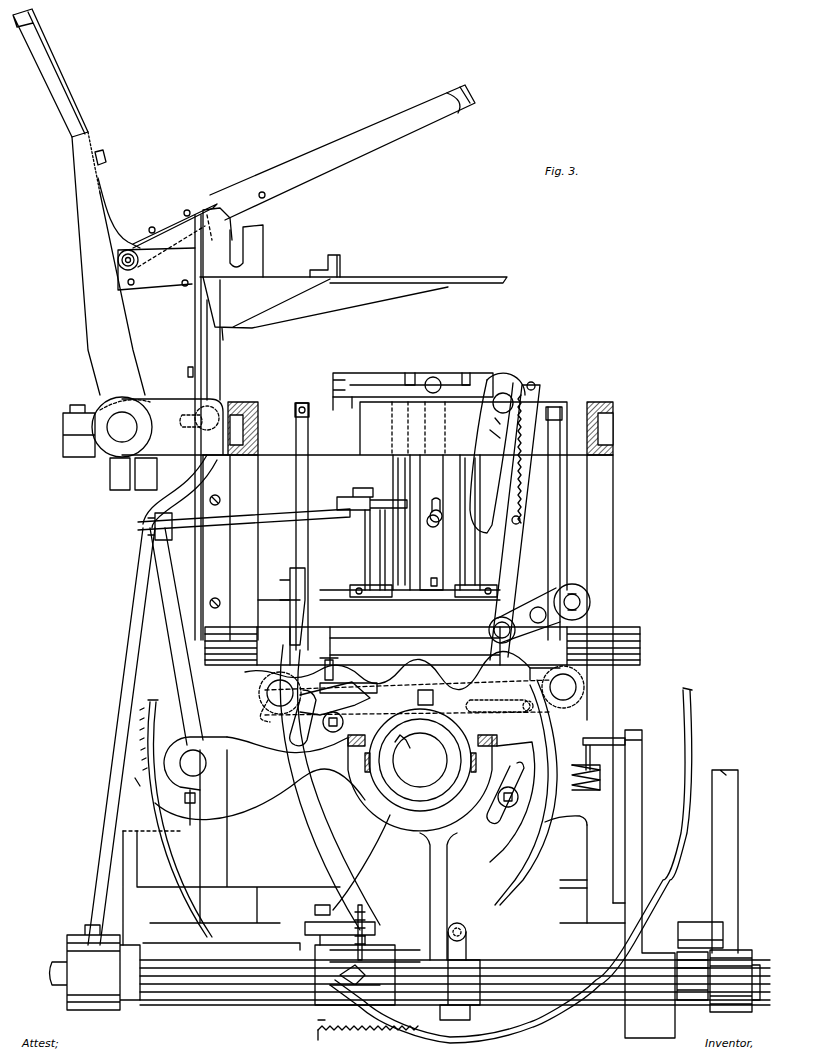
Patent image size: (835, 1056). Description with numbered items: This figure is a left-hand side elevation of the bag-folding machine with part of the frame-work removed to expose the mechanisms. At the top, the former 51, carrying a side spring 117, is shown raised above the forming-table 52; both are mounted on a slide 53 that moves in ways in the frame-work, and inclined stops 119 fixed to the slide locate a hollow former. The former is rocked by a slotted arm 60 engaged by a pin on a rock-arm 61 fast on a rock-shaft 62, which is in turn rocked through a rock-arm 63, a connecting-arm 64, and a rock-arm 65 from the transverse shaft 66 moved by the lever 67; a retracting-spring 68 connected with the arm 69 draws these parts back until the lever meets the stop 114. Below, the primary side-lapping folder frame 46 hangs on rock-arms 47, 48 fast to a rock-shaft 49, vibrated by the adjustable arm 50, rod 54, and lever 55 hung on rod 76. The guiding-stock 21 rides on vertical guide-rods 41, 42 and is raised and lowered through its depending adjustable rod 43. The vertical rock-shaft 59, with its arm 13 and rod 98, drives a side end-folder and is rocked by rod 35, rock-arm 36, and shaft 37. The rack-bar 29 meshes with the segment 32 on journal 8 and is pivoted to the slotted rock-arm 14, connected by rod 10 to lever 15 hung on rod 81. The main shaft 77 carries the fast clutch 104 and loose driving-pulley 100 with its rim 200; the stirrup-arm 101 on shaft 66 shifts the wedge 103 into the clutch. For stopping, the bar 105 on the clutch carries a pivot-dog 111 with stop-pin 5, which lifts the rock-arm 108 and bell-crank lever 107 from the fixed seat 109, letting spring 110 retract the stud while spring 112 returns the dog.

The stop-pin 5 is at (462, 928).
The journal 8 is at (506, 393).
The rod 10 is at (530, 666).
The arm 13 is at (325, 402).
The slotted rock-arm 14 is at (540, 606).
The lever 15 is at (405, 680).
The guiding-stock 21 is at (347, 408).
The rack-bar 29 is at (515, 521).
The segment 32 is at (491, 456).
The rod 35 is at (324, 520).
The rock-arm 36 is at (176, 636).
The shaft 37 is at (260, 781).
The vertical guide-rod 41 is at (371, 553).
The vertical guide-rod 42 is at (476, 526).
The depending adjustable rod 43 is at (431, 522).
The frame 46 is at (423, 403).
The rock-arm 47 is at (548, 548).
The rock-arm 48 is at (308, 478).
The rock-shaft 49 is at (422, 646).
The adjustable arm 50 is at (292, 606).
The former 51 is at (470, 92).
The forming-table 52 is at (353, 297).
The slide 53 is at (222, 377).
The rod 54 is at (328, 672).
The lever 55 is at (475, 701).
The vertical rock-shaft 59 is at (401, 522).
The slotted arm 60 is at (66, 100).
The rock-arm 61 is at (144, 263).
The rock-shaft 62 is at (145, 443).
The rock-arm 63 is at (166, 397).
The connecting-arm 64 is at (122, 700).
The rock-arm 65 is at (67, 941).
The transverse shaft 66 is at (455, 982).
The lever 67 is at (735, 891).
The retracting-spring 68 is at (596, 764).
The arm 69 is at (617, 884).
The rod 76 is at (563, 687).
The main shaft 77 is at (420, 760).
The rod 81 is at (280, 697).
The rod 98 is at (372, 376).
The loose driving-pulley 100 is at (692, 718).
The stirrup-arm 101 is at (422, 847).
The wedge 103 is at (375, 702).
The fast clutch 104 is at (511, 794).
The projecting bar 105 is at (335, 787).
The bell-crank lever 107 is at (355, 925).
The rock-arm 108 is at (372, 955).
The fixed seat 109 is at (231, 854).
The spring 110 is at (375, 962).
The pivot-dog 111 is at (466, 942).
The spring 112 is at (345, 1035).
The stop 114 is at (700, 961).
The spring 117 is at (342, 152).
The inclined stop 119 is at (190, 249).
The rim 200 is at (530, 852).